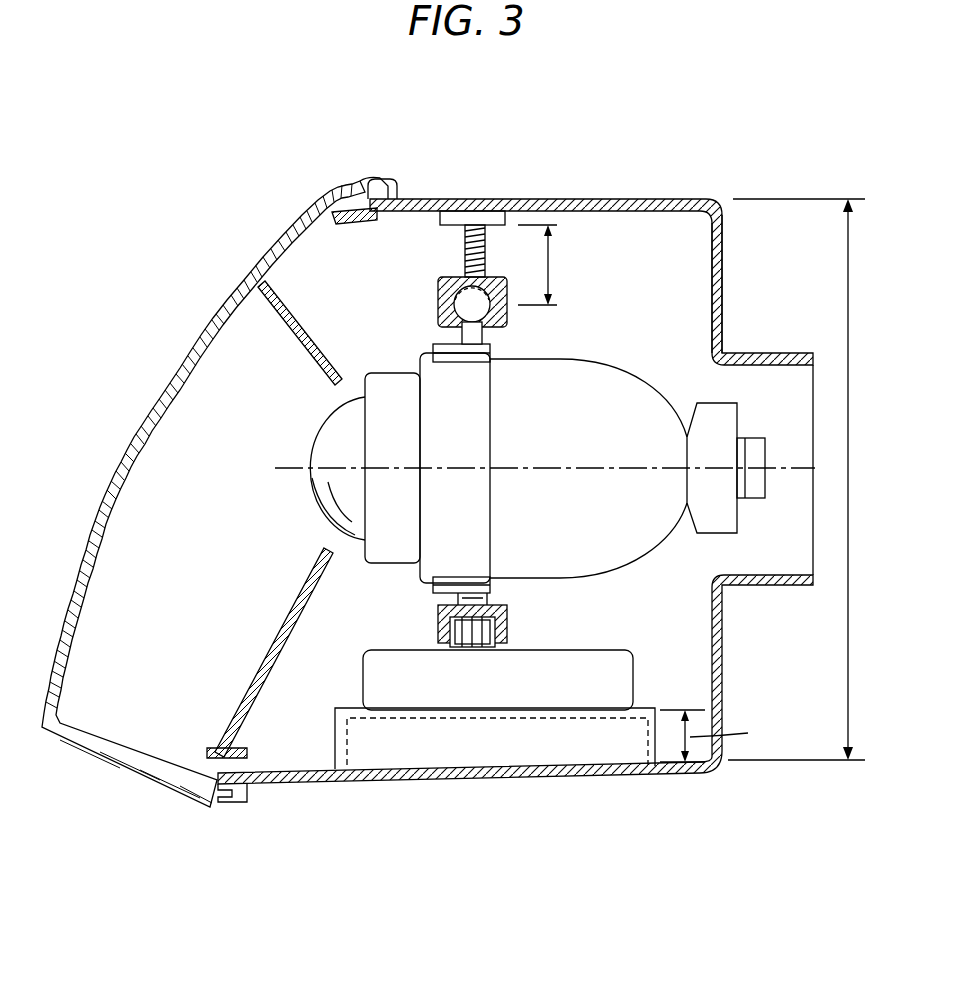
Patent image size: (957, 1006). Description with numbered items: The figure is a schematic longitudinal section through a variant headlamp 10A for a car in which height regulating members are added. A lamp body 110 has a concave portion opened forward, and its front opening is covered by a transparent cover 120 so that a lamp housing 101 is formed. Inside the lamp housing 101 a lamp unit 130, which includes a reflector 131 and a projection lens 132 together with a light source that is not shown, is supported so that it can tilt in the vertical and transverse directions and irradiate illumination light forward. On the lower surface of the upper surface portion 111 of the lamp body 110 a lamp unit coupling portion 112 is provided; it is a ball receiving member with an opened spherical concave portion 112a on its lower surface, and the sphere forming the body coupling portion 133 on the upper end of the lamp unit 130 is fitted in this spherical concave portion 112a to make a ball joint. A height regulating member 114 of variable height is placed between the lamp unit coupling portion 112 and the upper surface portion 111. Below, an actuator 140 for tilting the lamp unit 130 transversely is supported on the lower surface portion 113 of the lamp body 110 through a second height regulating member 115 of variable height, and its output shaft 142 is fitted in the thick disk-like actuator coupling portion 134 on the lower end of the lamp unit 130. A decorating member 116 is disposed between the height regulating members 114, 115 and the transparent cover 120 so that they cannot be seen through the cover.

The headlamp for a car 10A is at (254, 194).
The lamp housing 101 is at (667, 245).
The lamp body 110 is at (722, 252).
The upper surface portion 111 is at (602, 199).
The lower surface portion 113 is at (630, 772).
The height regulating member 114 is at (463, 257).
The height regulating member 115 is at (487, 757).
The decorating member 116 is at (297, 347).
The transparent cover 120 is at (212, 311).
The lamp unit coupling portion 112 is at (445, 287).
The spherical concave portion 112a is at (508, 320).
The lamp unit 130 is at (625, 402).
The reflector 131 is at (620, 540).
The projection lens 132 is at (330, 450).
The body coupling portion 133 is at (485, 328).
The actuator coupling portion 134 is at (507, 628).
The actuator 140 is at (558, 690).
The output shaft 142 is at (472, 632).